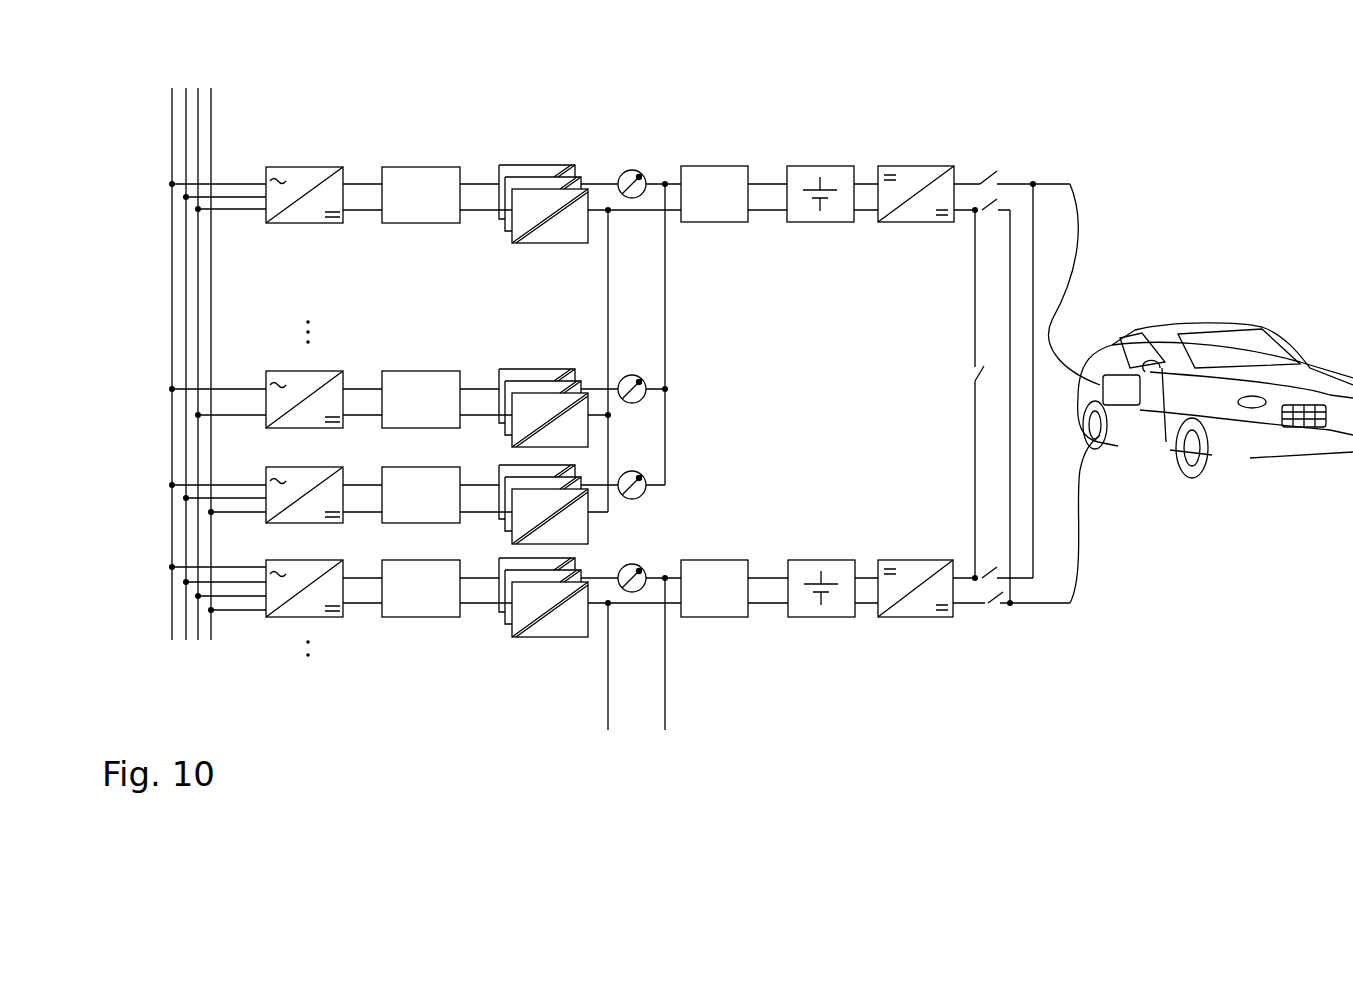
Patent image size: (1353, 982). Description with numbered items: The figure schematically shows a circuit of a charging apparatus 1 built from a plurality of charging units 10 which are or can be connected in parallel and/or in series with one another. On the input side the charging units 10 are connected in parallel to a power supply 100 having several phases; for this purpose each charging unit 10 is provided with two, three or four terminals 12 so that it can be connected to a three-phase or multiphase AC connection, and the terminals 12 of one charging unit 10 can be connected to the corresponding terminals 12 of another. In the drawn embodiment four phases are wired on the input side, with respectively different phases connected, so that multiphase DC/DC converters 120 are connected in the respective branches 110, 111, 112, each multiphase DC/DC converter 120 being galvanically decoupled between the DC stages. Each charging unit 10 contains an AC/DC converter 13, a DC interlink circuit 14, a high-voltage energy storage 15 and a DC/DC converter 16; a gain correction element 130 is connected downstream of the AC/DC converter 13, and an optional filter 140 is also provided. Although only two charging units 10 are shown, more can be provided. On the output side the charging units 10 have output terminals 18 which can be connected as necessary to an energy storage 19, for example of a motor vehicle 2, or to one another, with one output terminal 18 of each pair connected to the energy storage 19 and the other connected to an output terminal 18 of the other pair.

The charging apparatus 1 is at (993, 68).
The motor vehicle 2 is at (1290, 388).
The charging unit 10 is at (832, 142).
The terminal 12 is at (246, 160).
The AC/DC converter 13 is at (305, 176).
The DC interlink circuit 14 is at (354, 196).
The high-voltage energy storage 15 is at (831, 210).
The DC/DC converter 16 is at (916, 182).
The output terminal 18 is at (985, 172).
The energy storage 19 is at (1130, 391).
The power supply 100 is at (188, 342).
The branch 110 is at (472, 184).
The branch 111 is at (473, 389).
The branch 112 is at (473, 485).
The multiphase DC/DC converter 120 is at (560, 148).
The gain correction element 130 is at (410, 178).
The filter 140 is at (709, 184).